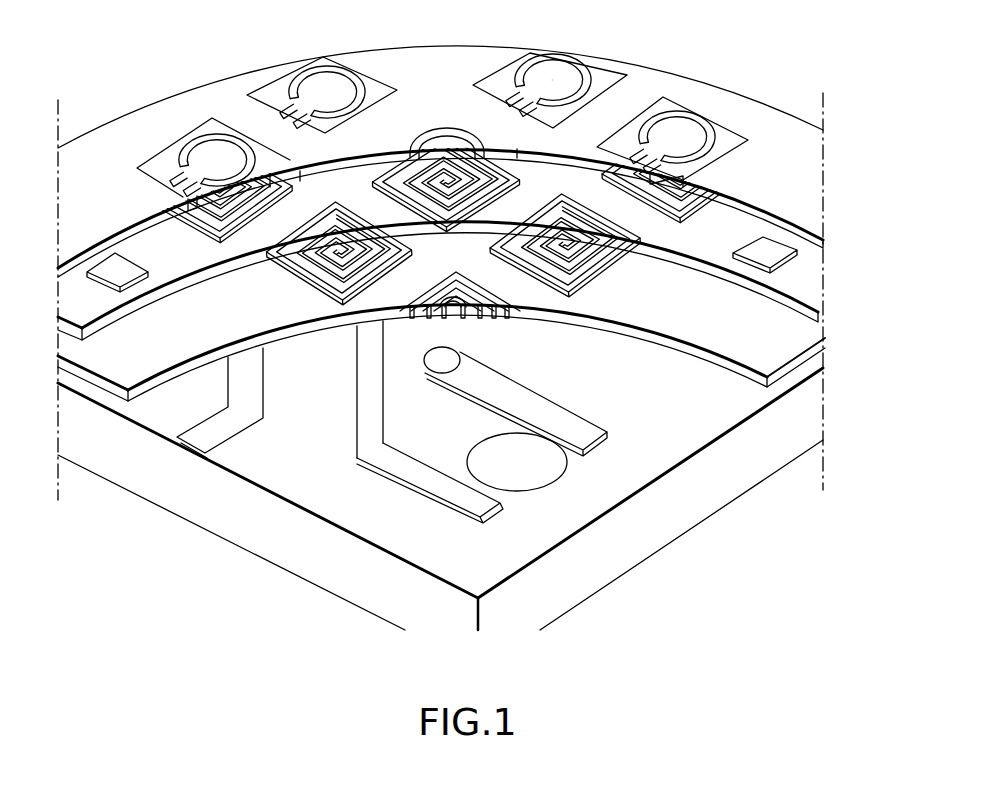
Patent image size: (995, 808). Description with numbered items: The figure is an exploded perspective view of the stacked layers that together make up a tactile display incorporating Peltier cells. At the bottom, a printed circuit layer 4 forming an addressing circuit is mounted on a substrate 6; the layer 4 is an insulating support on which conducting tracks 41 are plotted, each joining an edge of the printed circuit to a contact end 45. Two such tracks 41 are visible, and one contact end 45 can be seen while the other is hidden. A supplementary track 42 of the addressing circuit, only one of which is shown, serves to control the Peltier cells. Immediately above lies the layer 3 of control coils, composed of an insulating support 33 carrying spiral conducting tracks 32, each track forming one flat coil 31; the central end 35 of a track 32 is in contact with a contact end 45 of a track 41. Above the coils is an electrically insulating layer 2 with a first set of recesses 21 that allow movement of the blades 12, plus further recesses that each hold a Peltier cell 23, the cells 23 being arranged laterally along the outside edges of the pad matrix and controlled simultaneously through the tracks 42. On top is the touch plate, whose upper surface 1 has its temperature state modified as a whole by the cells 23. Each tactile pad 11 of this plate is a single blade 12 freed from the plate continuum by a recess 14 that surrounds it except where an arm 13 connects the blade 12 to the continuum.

The surface 1 is at (808, 182).
The electrically insulating layer 2 is at (807, 293).
The layer of coils 3 is at (470, 358).
The printed circuit layer 4 is at (440, 499).
The substrate 6 is at (723, 497).
The tactile pad 11 is at (442, 106).
The blade 12 is at (555, 72).
The arm 13 is at (525, 97).
The recess 14 is at (552, 56).
The recess 21 is at (313, 227).
The Peltier cell 23 is at (777, 253).
The coil 31 is at (447, 220).
The spiral conducting track 32 is at (630, 238).
The insulating support 33 is at (793, 373).
The end of conducting track 35 is at (340, 260).
The conducting track 41 is at (583, 422).
The supplementary track 42 is at (250, 393).
The contact end 45 is at (450, 355).